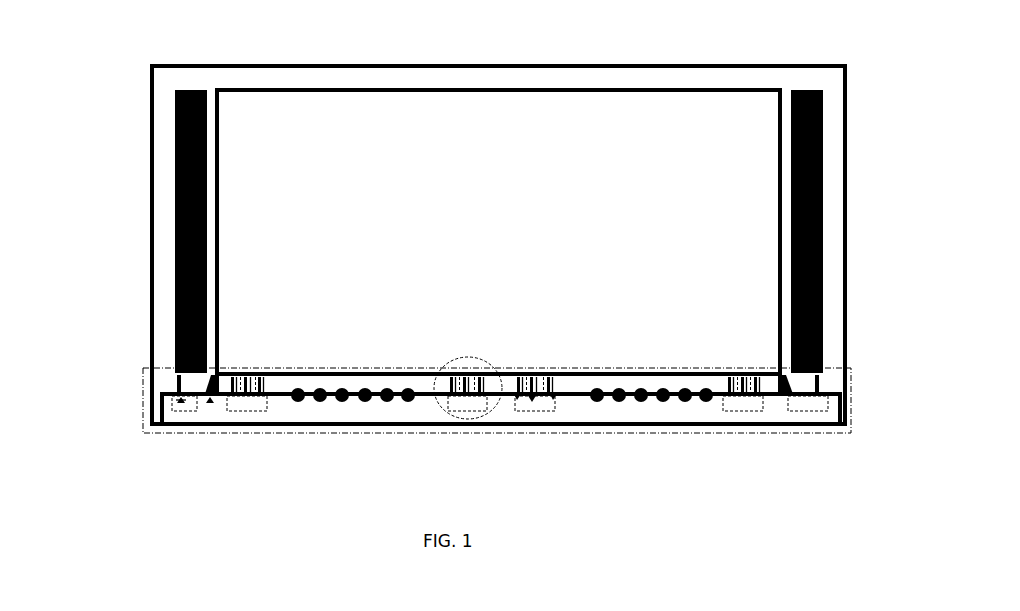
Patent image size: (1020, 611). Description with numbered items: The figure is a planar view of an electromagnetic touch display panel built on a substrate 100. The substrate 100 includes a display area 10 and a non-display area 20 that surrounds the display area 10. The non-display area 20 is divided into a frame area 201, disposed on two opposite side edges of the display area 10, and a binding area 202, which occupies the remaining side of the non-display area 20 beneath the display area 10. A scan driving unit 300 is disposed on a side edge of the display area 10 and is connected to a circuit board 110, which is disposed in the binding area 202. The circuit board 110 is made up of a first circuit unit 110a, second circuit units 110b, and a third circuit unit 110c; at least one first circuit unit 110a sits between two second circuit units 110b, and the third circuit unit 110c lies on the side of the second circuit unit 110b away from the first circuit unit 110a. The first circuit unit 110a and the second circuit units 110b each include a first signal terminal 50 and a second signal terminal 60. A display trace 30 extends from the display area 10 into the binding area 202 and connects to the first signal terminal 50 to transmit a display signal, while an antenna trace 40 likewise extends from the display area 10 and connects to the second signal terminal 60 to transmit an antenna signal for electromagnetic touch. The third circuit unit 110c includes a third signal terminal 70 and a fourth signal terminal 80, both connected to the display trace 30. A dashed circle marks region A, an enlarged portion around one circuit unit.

The substrate 100 is at (177, 61).
The display area 10 is at (755, 222).
The non-display area 20 is at (495, 270).
The frame area 201 is at (165, 222).
The binding area 202 is at (352, 402).
The scan driving unit 300 is at (175, 146).
The circuit board 110 is at (160, 401).
The first circuit unit 110a is at (477, 407).
The second circuit unit 110b is at (243, 412).
The third circuit unit 110c is at (208, 400).
The display trace 30 is at (247, 377).
The antenna trace 40 is at (236, 377).
The first signal terminal 50 is at (530, 400).
The second signal terminal 60 is at (513, 399).
The third signal terminal 70 is at (207, 405).
The fourth signal terminal 80 is at (181, 403).
The enlarged region A is at (437, 407).